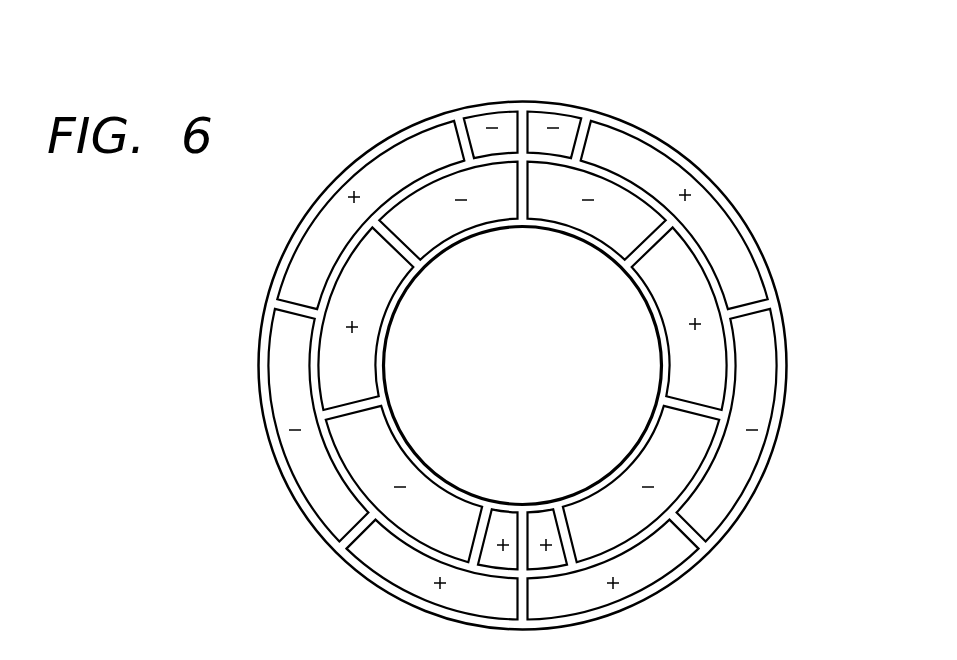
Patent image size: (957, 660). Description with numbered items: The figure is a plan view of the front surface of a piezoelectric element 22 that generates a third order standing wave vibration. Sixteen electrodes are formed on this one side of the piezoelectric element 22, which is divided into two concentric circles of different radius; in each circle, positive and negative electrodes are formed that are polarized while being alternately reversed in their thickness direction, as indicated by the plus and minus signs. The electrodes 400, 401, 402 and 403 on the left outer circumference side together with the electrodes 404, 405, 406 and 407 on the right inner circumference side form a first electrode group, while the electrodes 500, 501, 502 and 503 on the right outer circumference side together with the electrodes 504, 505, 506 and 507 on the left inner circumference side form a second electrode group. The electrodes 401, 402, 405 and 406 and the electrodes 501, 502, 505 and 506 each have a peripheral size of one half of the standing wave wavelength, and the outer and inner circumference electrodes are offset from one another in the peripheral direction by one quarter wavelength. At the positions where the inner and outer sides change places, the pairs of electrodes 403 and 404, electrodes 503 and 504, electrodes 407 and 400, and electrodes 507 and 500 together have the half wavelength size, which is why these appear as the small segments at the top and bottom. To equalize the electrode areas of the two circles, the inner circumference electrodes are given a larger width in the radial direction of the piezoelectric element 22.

The piezoelectric element 22 is at (860, 637).
The electrode 400 is at (492, 118).
The electrode 401 is at (367, 178).
The electrode 402 is at (278, 399).
The electrode 403 is at (400, 584).
The electrode 404 is at (552, 518).
The electrode 405 is at (652, 463).
The electrode 406 is at (677, 323).
The electrode 407 is at (575, 220).
The electrode 500 is at (552, 118).
The electrode 501 is at (672, 172).
The electrode 502 is at (772, 394).
The electrode 503 is at (658, 570).
The electrode 504 is at (505, 518).
The electrode 505 is at (393, 463).
The electrode 506 is at (365, 325).
The electrode 507 is at (452, 223).